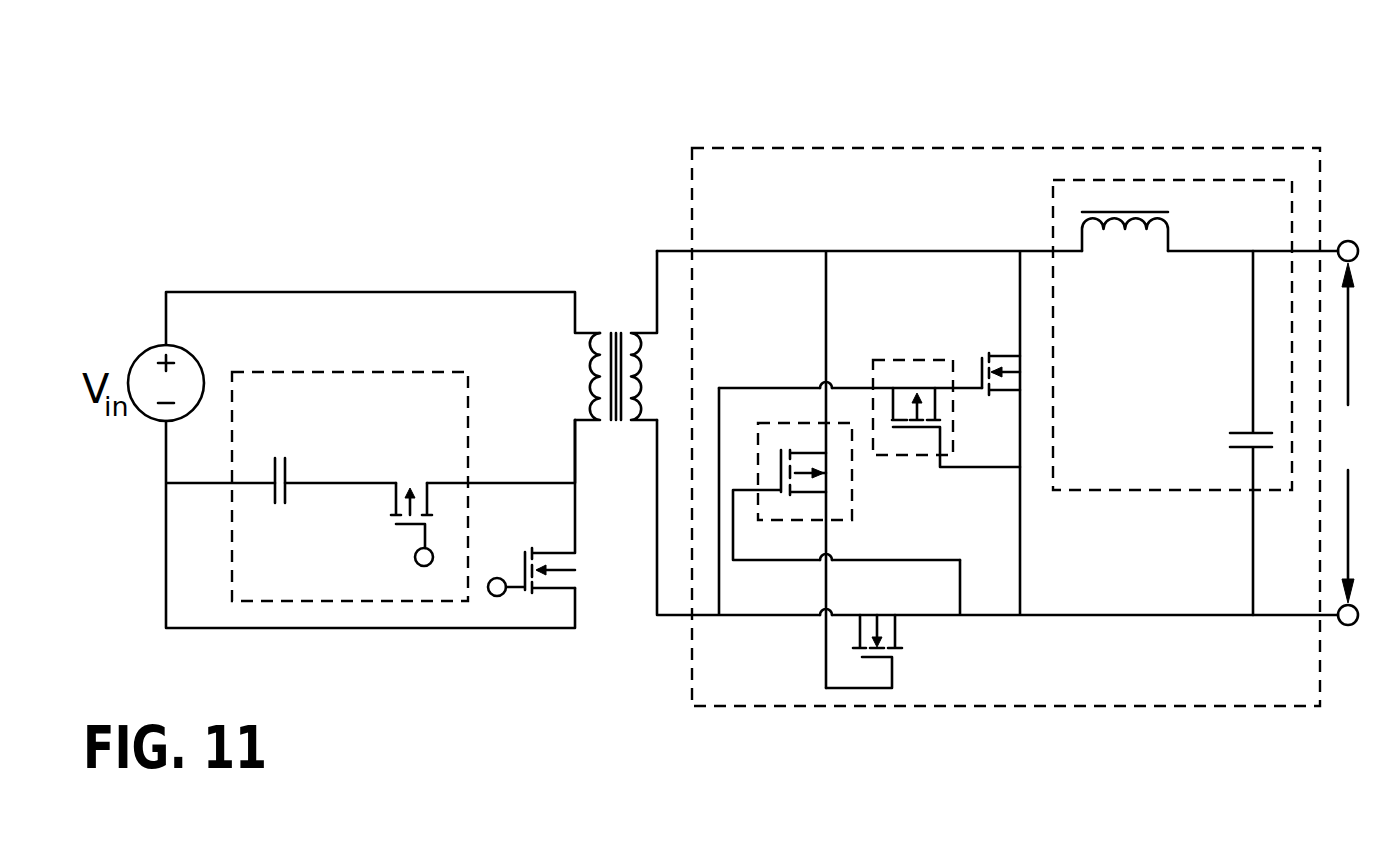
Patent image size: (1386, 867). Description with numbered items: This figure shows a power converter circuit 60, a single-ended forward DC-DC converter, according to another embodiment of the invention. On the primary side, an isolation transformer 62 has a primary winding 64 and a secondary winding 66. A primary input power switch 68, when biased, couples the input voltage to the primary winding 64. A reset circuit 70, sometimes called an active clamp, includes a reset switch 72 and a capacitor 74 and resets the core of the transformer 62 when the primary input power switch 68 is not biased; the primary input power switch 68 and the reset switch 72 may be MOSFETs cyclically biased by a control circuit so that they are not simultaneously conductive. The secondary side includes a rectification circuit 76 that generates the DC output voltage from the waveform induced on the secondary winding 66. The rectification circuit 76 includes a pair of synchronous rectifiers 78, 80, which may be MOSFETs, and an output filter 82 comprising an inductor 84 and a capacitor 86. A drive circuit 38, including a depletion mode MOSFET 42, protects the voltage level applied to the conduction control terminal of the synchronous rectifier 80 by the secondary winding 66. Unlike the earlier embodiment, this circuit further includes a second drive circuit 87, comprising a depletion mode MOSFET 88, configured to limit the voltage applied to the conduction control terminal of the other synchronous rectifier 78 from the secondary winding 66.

The power converter circuit 60 is at (1016, 356).
The rectification circuit 76 is at (1268, 147).
The isolation transformer 62 is at (571, 368).
The primary winding 64 is at (595, 397).
The secondary winding 66 is at (620, 420).
The primary input power switch 68 is at (577, 565).
The reset circuit 70 is at (350, 455).
The reset switch 72 is at (407, 530).
The capacitor 74 is at (284, 457).
The synchronous rectifier 78 is at (872, 615).
The synchronous rectifier 80 is at (985, 352).
The output filter 82 is at (1172, 397).
The inductor 84 is at (1122, 238).
The capacitor 86 is at (1223, 438).
The second drive circuit 87 is at (834, 447).
The depletion mode MOSFET 88 is at (785, 447).
The depletion mode MOSFET 42 is at (906, 378).
The drive circuit 38 is at (931, 410).